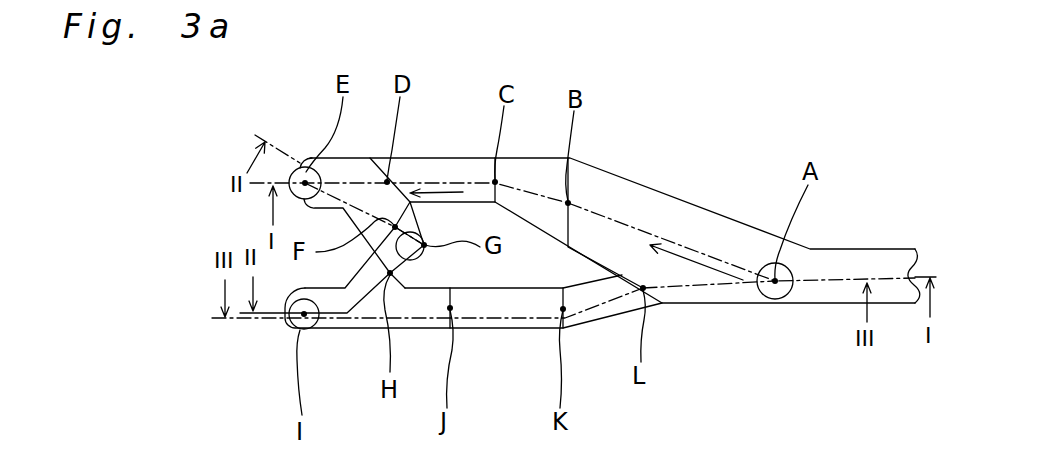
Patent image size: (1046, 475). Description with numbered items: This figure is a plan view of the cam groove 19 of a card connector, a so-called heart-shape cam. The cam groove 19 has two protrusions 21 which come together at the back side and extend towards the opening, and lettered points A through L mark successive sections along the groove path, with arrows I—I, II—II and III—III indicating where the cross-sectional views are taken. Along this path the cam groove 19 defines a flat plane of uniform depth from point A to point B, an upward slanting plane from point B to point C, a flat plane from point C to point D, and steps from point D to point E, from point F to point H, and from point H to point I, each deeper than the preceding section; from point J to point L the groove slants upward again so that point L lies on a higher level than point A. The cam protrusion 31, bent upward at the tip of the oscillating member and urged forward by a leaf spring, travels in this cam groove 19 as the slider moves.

The cam groove 19 is at (694, 192).
The protrusions 21 is at (303, 166).
The cam protrusion 31 is at (775, 300).